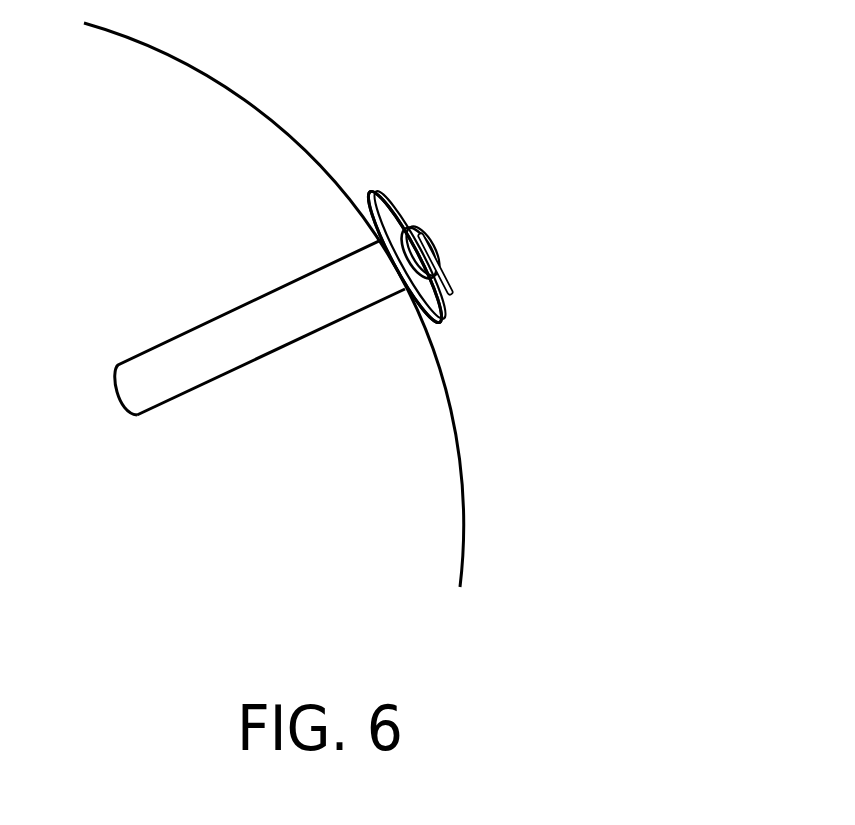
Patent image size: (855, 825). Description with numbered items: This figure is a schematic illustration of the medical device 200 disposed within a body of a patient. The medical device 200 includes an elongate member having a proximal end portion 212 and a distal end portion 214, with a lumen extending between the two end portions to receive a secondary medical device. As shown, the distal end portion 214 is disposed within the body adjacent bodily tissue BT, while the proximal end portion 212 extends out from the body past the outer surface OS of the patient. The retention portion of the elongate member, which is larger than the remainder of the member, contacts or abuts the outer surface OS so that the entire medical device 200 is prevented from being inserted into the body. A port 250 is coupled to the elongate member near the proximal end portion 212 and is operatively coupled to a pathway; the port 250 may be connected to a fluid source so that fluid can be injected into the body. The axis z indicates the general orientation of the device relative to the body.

The medical device 200 is at (257, 268).
The proximal end portion 212 is at (402, 208).
The distal end portion 214 is at (169, 383).
The port 250 is at (450, 275).
The z axis z is at (383, 202).
The outer surface OS is at (432, 348).
The bone tunnel BT is at (283, 385).